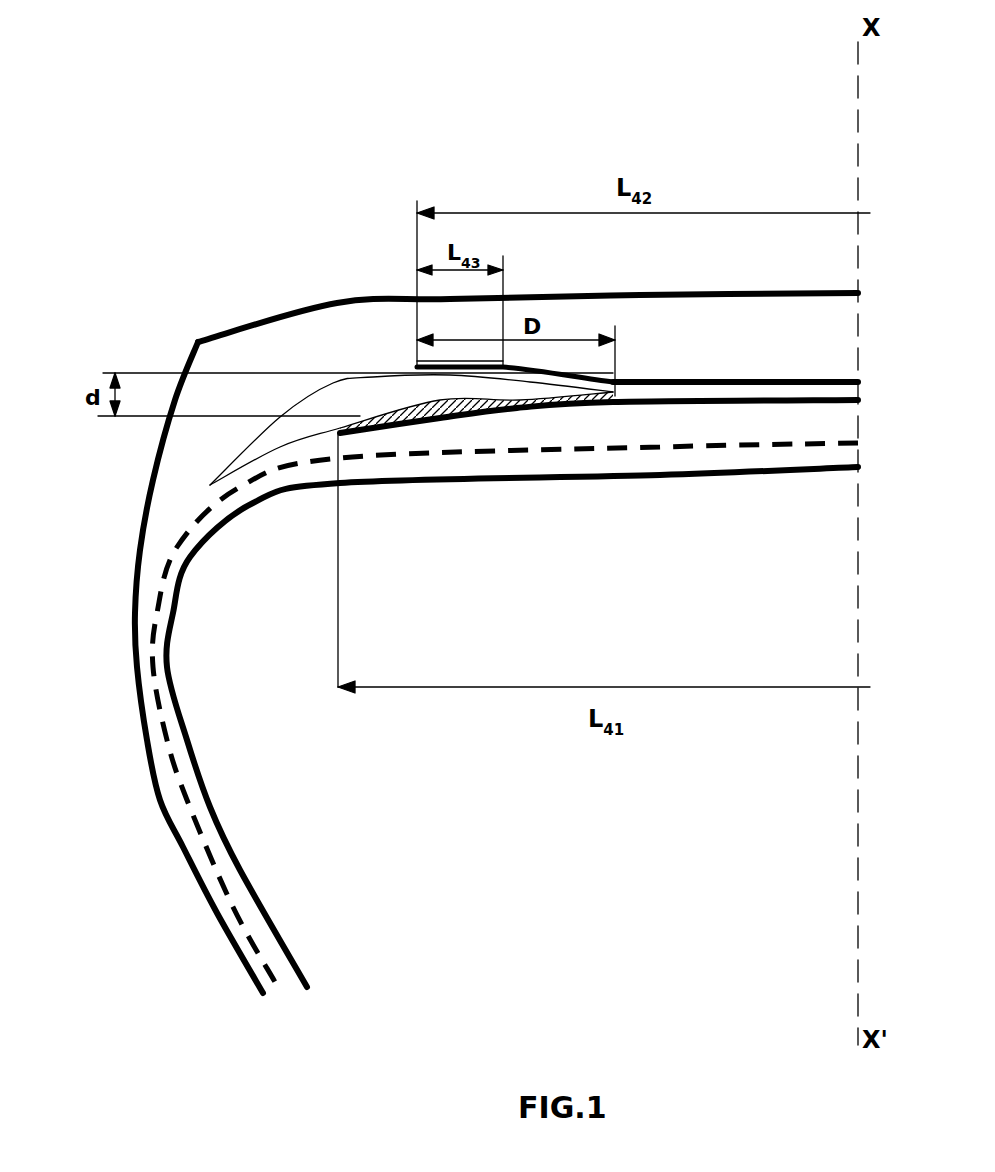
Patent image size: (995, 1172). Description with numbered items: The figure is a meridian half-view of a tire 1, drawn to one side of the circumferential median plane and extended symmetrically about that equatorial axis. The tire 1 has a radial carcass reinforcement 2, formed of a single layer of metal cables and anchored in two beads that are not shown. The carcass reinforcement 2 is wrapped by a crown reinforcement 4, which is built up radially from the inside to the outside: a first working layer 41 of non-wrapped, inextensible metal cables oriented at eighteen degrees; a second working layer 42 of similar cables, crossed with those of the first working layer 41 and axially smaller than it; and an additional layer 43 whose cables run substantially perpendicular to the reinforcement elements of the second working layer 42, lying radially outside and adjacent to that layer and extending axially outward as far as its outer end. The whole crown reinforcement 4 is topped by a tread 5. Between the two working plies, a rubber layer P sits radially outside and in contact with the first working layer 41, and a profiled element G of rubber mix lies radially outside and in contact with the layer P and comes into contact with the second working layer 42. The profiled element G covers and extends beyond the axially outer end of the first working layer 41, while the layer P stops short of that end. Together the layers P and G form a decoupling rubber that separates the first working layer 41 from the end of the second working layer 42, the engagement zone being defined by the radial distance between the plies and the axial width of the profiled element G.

The tire 1 is at (100, 305).
The radial carcass reinforcement 2 is at (167, 580).
The crown reinforcement 4 is at (878, 394).
The tread 5 is at (753, 312).
The first working layer 41 is at (803, 403).
The second working layer 42 is at (747, 380).
The additional layer 43 is at (427, 360).
The profiled element of rubber mix G is at (313, 400).
The rubber layer P is at (428, 414).